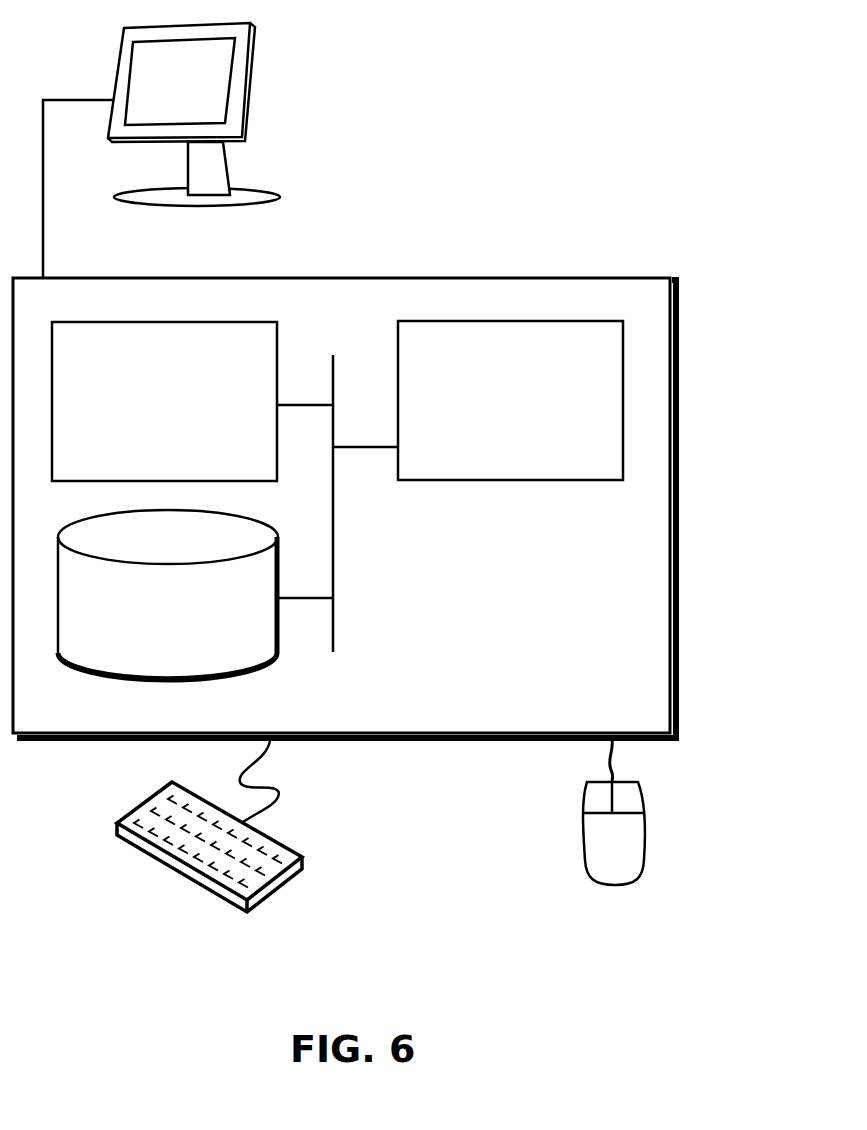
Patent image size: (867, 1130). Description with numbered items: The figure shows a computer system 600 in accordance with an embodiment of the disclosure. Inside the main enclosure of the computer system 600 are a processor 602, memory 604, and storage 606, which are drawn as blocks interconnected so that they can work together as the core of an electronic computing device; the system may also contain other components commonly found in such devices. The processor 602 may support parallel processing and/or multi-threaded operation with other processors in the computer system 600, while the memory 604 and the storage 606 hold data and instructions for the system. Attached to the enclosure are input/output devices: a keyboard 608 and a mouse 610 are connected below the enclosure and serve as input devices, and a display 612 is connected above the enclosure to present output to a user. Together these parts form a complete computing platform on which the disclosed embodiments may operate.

The computer system 600 is at (388, 257).
The processor 602 is at (510, 400).
The memory 604 is at (164, 401).
The storage 606 is at (168, 595).
The keyboard 608 is at (133, 845).
The mouse 610 is at (614, 810).
The display 612 is at (161, 150).